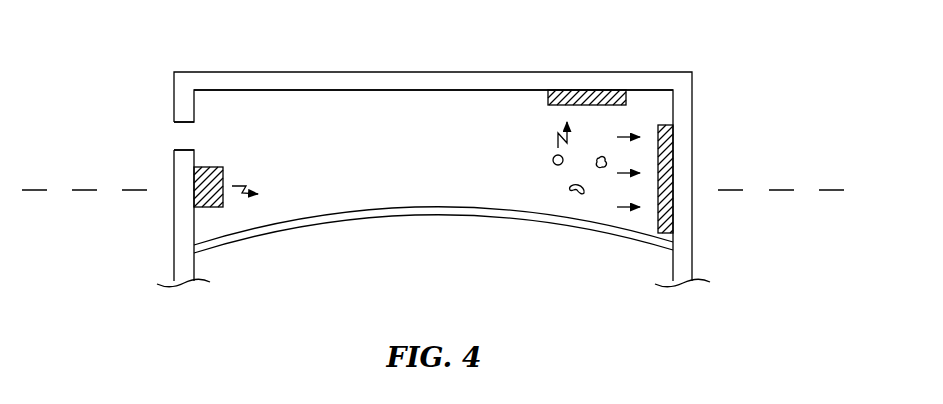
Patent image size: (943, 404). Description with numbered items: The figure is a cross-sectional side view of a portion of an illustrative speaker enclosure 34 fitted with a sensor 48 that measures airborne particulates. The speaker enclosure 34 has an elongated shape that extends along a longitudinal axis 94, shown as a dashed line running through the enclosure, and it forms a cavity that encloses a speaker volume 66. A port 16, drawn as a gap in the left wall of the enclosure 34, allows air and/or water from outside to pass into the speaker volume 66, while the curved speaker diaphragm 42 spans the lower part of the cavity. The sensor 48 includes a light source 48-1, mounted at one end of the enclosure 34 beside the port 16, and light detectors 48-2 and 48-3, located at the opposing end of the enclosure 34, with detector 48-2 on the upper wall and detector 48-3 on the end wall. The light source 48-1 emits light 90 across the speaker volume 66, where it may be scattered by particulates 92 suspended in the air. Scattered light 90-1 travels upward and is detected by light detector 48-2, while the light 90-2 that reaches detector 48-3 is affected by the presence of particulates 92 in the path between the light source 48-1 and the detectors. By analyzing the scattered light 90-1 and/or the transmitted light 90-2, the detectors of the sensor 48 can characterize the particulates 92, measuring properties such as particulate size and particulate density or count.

The port 16 is at (165, 133).
The speaker enclosure 34 is at (252, 80).
The speaker diaphragm 42 is at (422, 216).
The sensor 48 is at (249, 150).
The light source 48-1 is at (210, 208).
The light detector 48-2 is at (593, 92).
The light detector 48-3 is at (673, 161).
The speaker volume 66 is at (410, 103).
The light 90 is at (252, 199).
The scattered light 90-1 is at (558, 136).
The light 90-2 is at (624, 209).
The particulates 92 is at (570, 190).
The longitudinal axis 94 is at (33, 190).